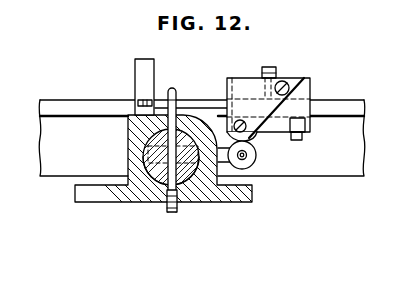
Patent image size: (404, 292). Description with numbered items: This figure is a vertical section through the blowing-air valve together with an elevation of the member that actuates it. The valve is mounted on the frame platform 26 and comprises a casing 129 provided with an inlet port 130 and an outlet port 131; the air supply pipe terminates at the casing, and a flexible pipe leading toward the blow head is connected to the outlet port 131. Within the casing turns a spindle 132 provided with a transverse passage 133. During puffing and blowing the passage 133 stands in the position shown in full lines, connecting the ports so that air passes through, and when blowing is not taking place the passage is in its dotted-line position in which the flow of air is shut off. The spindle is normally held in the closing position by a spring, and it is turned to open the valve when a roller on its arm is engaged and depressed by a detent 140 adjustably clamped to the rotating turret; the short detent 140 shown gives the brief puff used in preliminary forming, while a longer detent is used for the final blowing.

The frame platform 26 is at (80, 108).
The valve casing 129 is at (128, 150).
The inlet port 130 is at (184, 189).
The outlet port 131 is at (174, 116).
The valve spindle 132 is at (146, 188).
The transverse passage 133 is at (166, 178).
The detent 140 is at (290, 83).